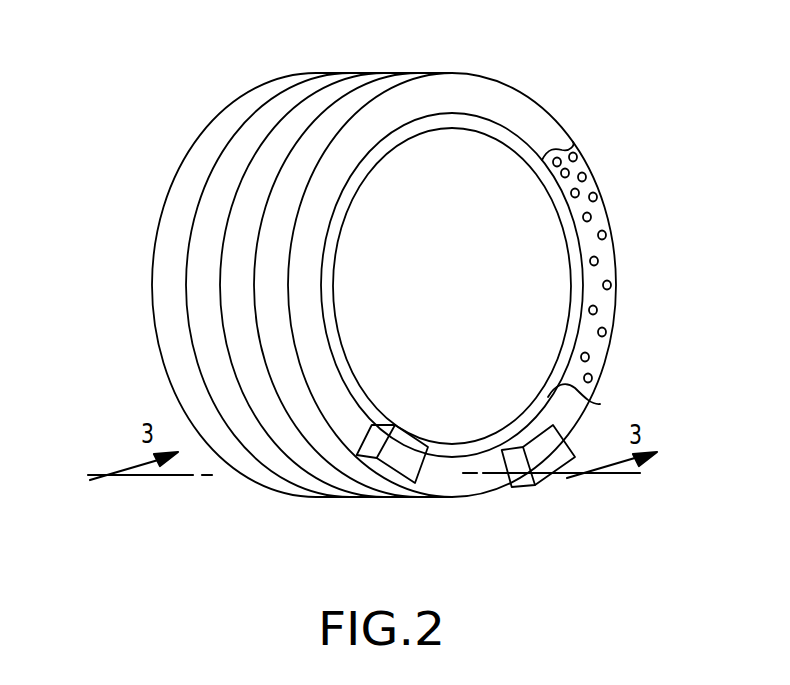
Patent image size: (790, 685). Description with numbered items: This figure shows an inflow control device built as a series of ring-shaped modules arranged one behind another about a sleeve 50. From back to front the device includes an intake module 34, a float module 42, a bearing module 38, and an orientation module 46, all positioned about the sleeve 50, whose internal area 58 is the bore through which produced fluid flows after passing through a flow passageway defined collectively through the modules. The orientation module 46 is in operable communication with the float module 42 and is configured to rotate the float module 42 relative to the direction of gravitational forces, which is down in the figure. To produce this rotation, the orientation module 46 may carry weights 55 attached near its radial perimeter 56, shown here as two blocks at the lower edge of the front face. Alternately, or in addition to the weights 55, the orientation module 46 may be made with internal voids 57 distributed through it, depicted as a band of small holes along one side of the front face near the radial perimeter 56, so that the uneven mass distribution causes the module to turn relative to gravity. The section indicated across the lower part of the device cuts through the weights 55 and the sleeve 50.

The intake module 34 is at (240, 110).
The float module 42 is at (293, 97).
The bearing module 38 is at (348, 87).
The orientation module 46 is at (430, 95).
The radial perimeter 56 is at (543, 110).
The internal area 58 is at (400, 303).
The internal voids 57 is at (584, 177).
The sleeve 50 is at (570, 404).
The weights 55 is at (397, 455).